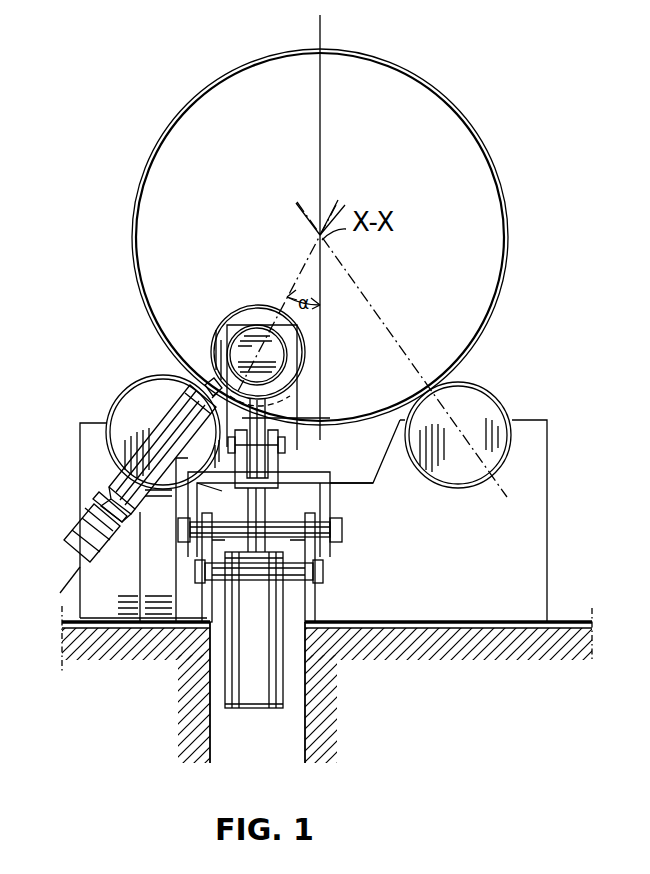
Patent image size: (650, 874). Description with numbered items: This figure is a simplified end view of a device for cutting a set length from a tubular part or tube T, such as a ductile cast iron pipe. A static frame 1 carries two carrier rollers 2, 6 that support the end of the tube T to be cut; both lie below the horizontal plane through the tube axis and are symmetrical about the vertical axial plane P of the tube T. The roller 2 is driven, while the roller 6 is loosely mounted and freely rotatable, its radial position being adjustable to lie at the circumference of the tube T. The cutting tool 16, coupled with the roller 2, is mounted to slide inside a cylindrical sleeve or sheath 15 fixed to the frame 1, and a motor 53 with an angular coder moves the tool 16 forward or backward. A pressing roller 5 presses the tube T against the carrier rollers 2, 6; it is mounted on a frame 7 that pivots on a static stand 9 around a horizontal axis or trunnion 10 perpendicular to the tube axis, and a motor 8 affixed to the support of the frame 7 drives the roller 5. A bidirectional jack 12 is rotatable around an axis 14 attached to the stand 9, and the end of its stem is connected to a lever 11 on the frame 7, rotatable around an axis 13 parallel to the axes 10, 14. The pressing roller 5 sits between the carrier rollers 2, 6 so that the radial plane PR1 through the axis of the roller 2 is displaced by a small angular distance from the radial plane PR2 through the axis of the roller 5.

The static frame 1 is at (527, 545).
The carrier roller 2 is at (138, 407).
The pressing roller 5 is at (248, 318).
The carrier roller 6 is at (480, 420).
The frame 7 is at (302, 462).
The motor 8 is at (272, 355).
The static stand 9 is at (315, 605).
The horizontal axis or trunnion 10 is at (342, 533).
The lever 11 is at (278, 405).
The bidirectional jack 12 is at (262, 700).
The axis 13 is at (298, 447).
The axis 14 is at (323, 572).
The cylindrical sleeve or sheath 15 is at (116, 480).
The cutting tool 16 is at (208, 386).
The motor 53 is at (88, 540).
The vertical axial plane P is at (322, 70).
The tubular part or tube T is at (480, 124).
The radial plane PR1 is at (283, 288).
The radial plane PR2 is at (313, 276).